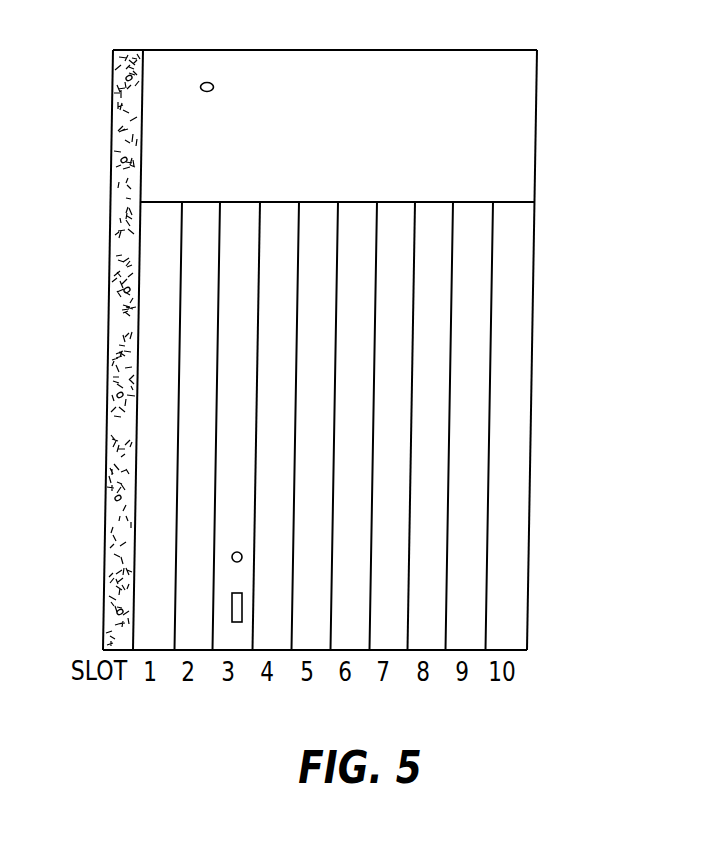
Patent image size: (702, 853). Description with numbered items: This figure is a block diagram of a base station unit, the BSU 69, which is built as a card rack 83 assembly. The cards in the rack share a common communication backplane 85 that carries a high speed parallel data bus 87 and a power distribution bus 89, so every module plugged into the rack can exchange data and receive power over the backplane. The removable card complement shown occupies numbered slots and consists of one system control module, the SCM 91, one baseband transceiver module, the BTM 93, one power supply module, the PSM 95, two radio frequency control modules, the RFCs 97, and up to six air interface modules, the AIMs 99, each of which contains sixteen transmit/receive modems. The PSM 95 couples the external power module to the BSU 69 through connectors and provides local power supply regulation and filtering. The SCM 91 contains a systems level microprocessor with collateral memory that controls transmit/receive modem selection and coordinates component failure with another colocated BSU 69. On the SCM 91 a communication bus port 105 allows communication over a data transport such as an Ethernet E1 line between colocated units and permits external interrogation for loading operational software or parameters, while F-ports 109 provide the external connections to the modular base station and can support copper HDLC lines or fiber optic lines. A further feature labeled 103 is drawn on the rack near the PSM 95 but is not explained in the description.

The base station unit (BSU) 69 is at (593, 170).
The card rack 83 is at (100, 262).
The common communication backplane 85 is at (106, 407).
The high speed parallel data bus 87 is at (547, 350).
The power distribution bus 89 is at (547, 397).
The power supply module (PSM) 95 is at (323, 148).
The radio frequency control module (RFC) 97 is at (150, 266).
The system control module (SCM) 91 is at (226, 266).
The air interface module (AIM) 99 is at (265, 270).
The baseband transceiver module (BTM) 93 is at (381, 290).
The mounting hole 103 is at (209, 82).
The F-port 109 is at (231, 557).
The communication bus port 105 is at (231, 622).